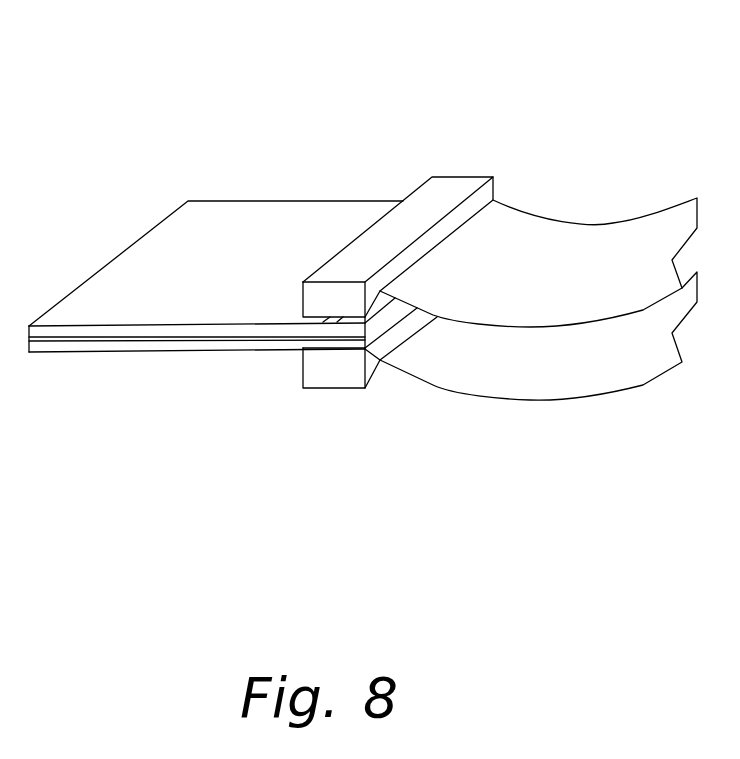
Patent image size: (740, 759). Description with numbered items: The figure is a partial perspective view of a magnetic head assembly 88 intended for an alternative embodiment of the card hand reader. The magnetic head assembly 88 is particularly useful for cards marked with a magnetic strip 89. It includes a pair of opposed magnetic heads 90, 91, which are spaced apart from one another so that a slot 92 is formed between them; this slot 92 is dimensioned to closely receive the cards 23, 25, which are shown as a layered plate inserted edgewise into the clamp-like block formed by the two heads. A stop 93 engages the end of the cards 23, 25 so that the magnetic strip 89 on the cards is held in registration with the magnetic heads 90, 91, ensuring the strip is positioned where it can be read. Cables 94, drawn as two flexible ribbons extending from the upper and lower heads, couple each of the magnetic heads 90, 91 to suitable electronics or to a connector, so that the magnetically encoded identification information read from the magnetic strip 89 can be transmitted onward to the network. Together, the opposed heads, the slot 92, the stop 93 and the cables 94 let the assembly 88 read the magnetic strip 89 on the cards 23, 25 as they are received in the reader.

The card 23 is at (243, 233).
The card 25 is at (167, 352).
The magnetic head assembly 88 is at (390, 80).
The magnetic strip 89 is at (333, 317).
The magnetic head 90 is at (450, 187).
The magnetic head 91 is at (333, 388).
The slot 92 is at (282, 372).
The stop 93 is at (372, 330).
The cables 94 is at (582, 257).